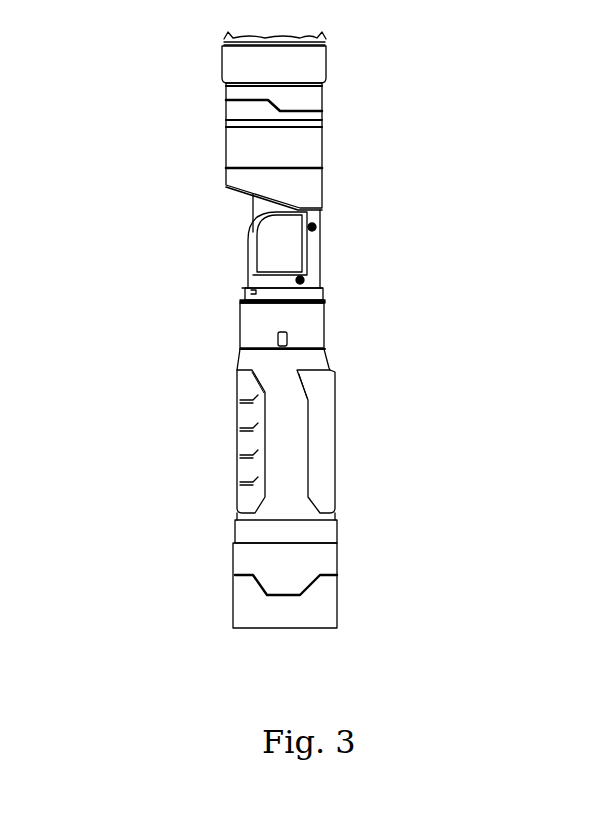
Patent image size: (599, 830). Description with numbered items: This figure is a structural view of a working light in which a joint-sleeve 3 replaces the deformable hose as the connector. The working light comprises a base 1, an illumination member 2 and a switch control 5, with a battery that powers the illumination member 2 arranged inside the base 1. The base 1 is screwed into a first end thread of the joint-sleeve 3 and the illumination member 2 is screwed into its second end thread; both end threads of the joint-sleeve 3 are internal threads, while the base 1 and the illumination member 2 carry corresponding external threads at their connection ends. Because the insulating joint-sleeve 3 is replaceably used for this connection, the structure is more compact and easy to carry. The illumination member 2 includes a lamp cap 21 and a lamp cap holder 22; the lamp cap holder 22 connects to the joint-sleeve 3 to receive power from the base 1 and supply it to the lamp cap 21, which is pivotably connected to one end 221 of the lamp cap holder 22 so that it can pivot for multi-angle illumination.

The base 1 is at (361, 561).
The illumination member 2 is at (343, 122).
The lamp cap 21 is at (225, 115).
The lamp cap holder 22 is at (243, 266).
The end of the lamp cap holder 221 is at (249, 237).
The joint-sleeve 3 is at (323, 330).
The switch control 5 is at (237, 447).